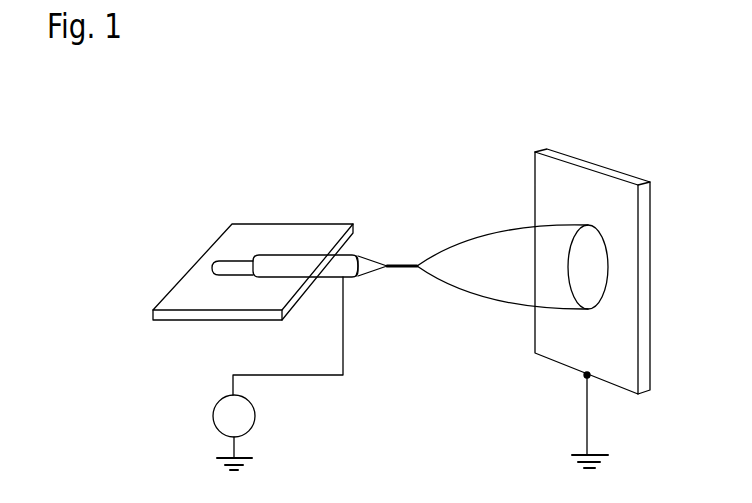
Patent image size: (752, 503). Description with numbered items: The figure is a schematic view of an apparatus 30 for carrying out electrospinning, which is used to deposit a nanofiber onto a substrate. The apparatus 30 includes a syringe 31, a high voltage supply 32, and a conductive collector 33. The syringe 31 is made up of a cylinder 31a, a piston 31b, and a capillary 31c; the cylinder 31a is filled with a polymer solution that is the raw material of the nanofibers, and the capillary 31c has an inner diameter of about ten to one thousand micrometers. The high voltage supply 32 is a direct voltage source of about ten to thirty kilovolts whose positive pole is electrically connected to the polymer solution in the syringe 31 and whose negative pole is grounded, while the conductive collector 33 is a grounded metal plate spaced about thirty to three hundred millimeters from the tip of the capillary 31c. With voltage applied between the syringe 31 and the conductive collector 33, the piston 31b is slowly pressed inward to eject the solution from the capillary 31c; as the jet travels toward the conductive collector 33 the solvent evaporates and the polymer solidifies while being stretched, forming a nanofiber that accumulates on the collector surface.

The apparatus 30 is at (489, 145).
The syringe 31 is at (390, 143).
The cylinder 31a is at (300, 255).
The piston 31b is at (243, 261).
The capillary 31c is at (405, 262).
The high voltage supply 32 is at (213, 420).
The conductive collector 33 is at (545, 358).